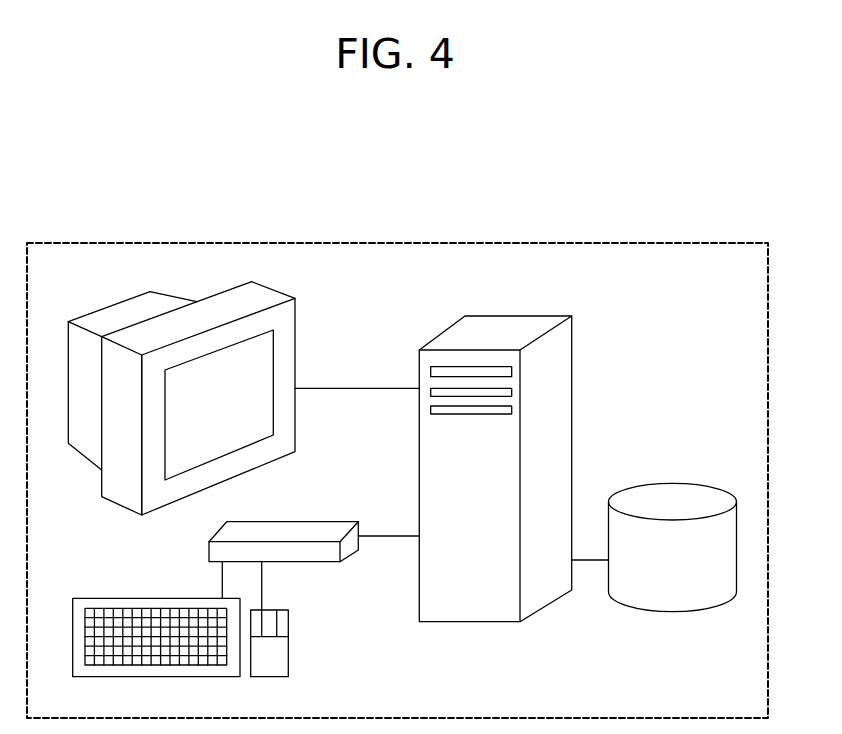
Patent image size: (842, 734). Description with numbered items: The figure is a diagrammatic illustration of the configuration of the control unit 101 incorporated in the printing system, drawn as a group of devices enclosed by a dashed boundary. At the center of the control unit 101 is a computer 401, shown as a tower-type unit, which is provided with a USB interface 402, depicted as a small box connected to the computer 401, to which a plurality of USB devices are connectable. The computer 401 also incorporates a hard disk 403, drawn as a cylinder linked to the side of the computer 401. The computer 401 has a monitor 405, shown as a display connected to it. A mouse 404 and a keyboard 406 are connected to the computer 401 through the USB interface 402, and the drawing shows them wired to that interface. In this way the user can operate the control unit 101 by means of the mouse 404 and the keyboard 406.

The control unit 101 is at (110, 242).
The computer 401 is at (512, 315).
The USB interface 402 is at (296, 520).
The hard disk 403 is at (672, 483).
The mouse 404 is at (290, 653).
The monitor 405 is at (297, 318).
The keyboard 406 is at (120, 598).